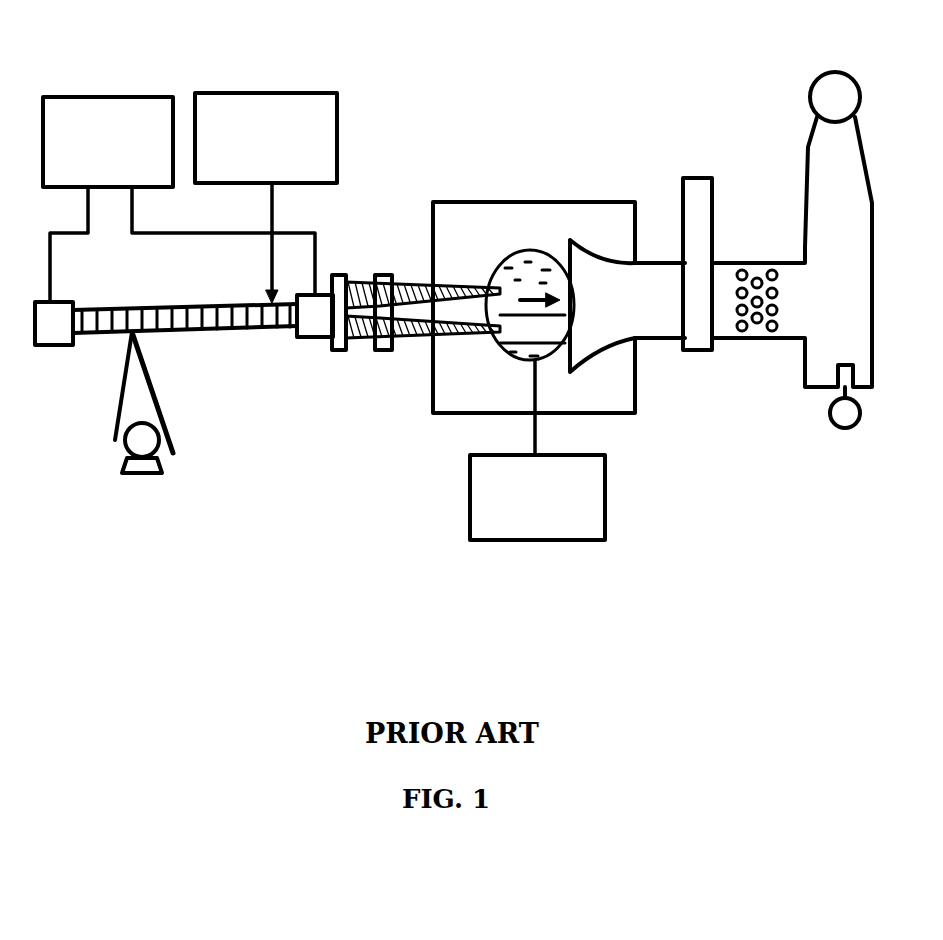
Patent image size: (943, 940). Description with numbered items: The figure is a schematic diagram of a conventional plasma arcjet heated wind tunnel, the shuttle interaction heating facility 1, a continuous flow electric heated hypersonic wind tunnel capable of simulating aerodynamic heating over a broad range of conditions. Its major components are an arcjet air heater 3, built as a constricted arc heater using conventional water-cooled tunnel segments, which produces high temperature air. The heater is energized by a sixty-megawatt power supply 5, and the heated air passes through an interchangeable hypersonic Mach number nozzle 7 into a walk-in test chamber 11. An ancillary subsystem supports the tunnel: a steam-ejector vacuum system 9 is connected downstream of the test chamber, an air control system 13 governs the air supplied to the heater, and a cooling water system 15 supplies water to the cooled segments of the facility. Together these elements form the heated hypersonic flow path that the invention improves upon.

The shuttle interaction heating facility 1 is at (437, 160).
The arcjet air heater 3 is at (240, 340).
The power supply 5 is at (106, 170).
The hypersonic Mach number nozzle 7 is at (363, 349).
The steam-ejector vacuum system 9 is at (834, 432).
The walk-in test chamber 11 is at (542, 512).
The air control system 13 is at (258, 166).
The cooling water system 15 is at (120, 443).